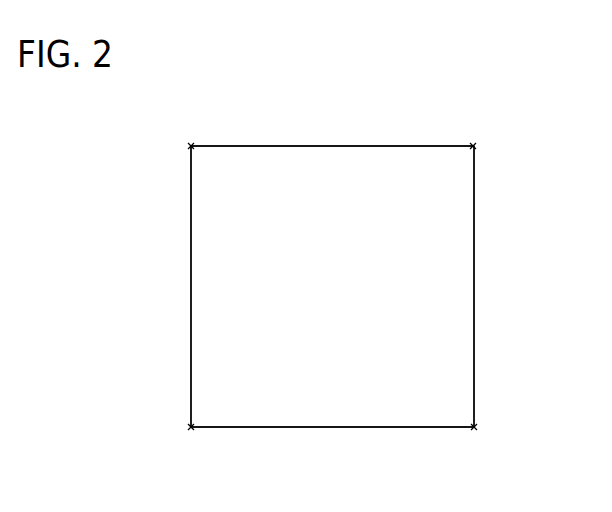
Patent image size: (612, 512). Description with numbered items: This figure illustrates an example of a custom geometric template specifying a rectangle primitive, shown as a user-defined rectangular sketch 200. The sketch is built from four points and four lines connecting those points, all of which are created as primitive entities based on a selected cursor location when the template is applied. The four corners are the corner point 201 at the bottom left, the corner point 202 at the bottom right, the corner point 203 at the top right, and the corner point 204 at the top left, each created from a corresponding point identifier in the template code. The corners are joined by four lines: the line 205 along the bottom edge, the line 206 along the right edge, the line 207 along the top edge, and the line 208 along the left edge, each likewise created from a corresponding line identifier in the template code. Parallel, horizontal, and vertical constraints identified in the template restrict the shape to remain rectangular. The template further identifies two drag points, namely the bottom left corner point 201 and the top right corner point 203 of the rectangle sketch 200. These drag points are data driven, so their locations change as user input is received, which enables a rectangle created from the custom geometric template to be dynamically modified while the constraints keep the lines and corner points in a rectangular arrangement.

The rectangular sketch 200 is at (373, 333).
The corner point 201 is at (187, 437).
The corner point 202 is at (481, 429).
The corner point 203 is at (479, 132).
The corner point 204 is at (184, 149).
The line 205 is at (340, 430).
The line 206 is at (476, 258).
The line 207 is at (312, 143).
The line 208 is at (188, 243).